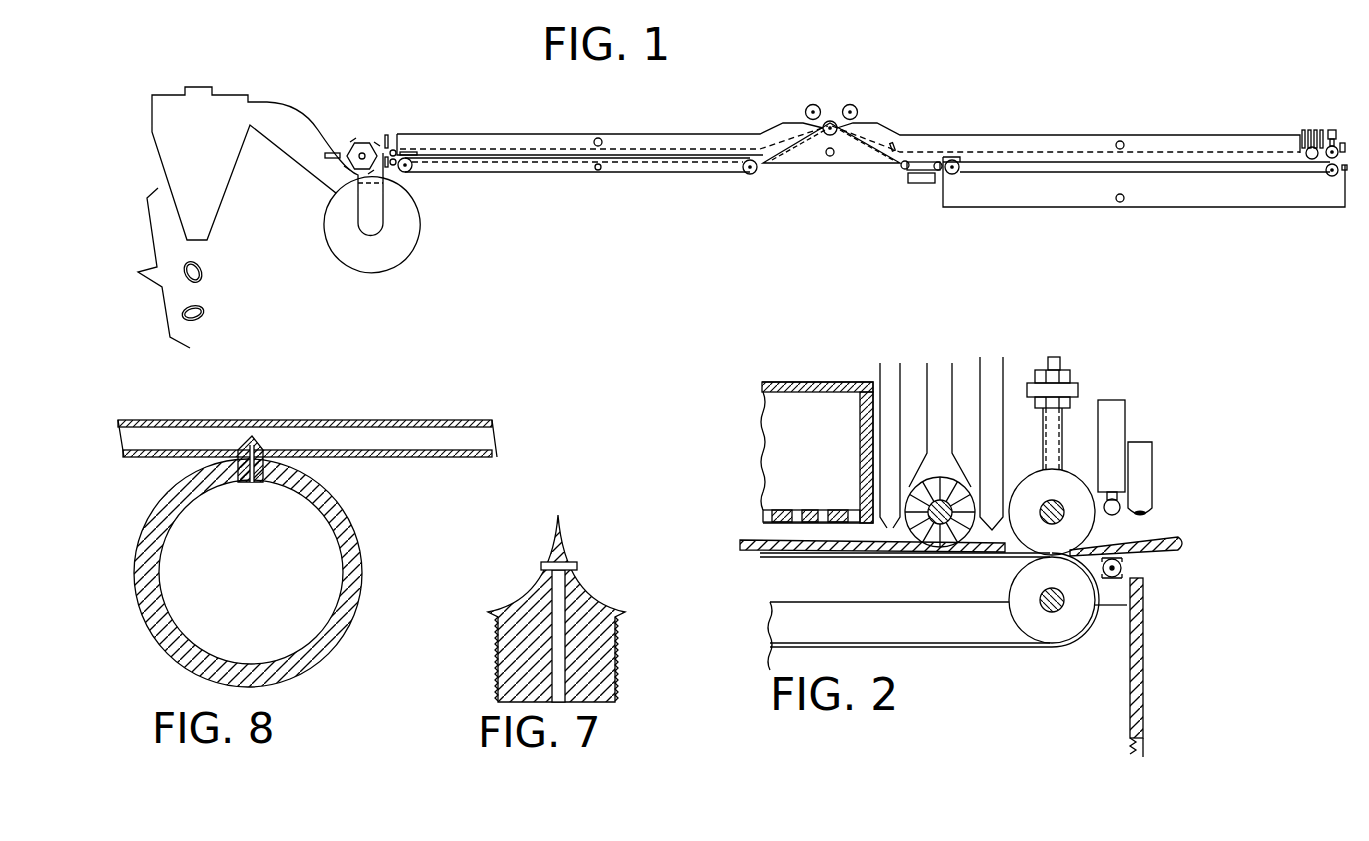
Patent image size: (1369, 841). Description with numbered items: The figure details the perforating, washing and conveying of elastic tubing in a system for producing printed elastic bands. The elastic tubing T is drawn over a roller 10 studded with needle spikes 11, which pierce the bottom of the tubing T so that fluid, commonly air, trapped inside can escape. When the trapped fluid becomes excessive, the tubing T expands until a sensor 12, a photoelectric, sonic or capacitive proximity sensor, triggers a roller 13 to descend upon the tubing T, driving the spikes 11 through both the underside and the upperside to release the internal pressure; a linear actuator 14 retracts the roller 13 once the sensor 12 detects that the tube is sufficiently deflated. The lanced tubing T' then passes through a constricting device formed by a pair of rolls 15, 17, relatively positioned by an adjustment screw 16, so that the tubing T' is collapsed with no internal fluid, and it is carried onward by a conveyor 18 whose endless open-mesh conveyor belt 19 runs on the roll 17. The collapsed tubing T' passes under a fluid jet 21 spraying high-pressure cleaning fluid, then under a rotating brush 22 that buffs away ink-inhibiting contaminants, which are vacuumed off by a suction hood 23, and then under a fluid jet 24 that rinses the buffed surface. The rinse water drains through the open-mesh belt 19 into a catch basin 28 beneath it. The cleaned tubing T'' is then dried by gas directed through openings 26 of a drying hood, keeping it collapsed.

The roller 10 is at (1123, 572).
The needle spikes 11 is at (1113, 583).
The sensor 12 is at (1153, 462).
The roller 13 is at (1110, 517).
The linear actuator 14 is at (1117, 400).
The roll 15 is at (1072, 483).
The adjustment screw 16 is at (1055, 357).
The roll 17 is at (1010, 591).
The conveyor 18 is at (893, 640).
The open-mesh conveyor belt 19 is at (833, 641).
The fluid jet 21 is at (993, 357).
The rotating brush 22 is at (900, 552).
The suction hood 23 is at (940, 363).
The fluid jet 24 is at (890, 363).
The openings 26 is at (843, 507).
The catch basin 28 is at (787, 622).
The elastic tubing T is at (1138, 531).
The lanced tubing T' is at (905, 567).
The cleaned tubing T'' is at (865, 533).